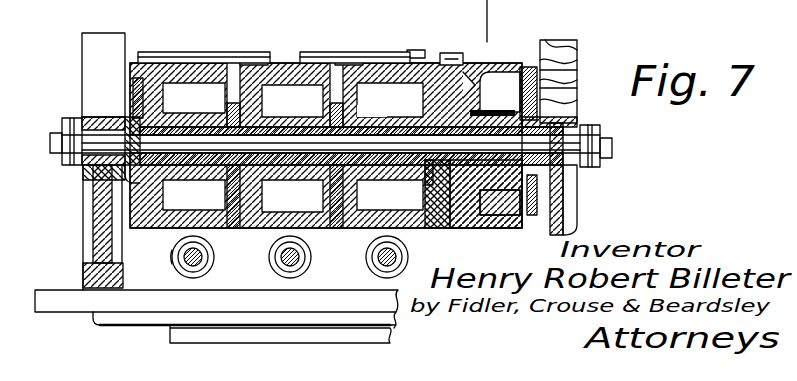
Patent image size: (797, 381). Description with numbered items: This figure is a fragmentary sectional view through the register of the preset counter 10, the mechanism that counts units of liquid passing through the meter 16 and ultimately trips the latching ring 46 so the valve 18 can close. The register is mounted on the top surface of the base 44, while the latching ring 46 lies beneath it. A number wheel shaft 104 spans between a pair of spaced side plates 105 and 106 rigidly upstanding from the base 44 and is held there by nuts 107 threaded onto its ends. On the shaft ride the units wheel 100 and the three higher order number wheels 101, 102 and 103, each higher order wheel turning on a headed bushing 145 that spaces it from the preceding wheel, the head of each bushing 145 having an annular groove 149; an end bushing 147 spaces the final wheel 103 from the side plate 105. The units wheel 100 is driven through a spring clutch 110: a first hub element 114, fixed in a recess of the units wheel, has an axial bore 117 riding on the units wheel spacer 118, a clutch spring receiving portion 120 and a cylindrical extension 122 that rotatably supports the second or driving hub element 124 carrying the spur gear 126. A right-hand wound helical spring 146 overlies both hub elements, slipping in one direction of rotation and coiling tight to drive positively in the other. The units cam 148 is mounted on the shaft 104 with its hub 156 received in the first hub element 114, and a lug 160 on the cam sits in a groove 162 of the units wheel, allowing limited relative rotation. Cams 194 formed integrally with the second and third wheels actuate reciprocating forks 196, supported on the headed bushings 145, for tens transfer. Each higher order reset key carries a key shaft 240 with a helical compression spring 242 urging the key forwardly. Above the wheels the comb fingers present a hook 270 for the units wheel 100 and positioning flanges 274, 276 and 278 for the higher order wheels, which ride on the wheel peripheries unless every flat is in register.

The counter 10 is at (476, 3).
The meter 16 is at (507, 5).
The valve 18 is at (445, 25).
The base 44 is at (55, 296).
The latching ring 46 is at (112, 336).
The units wheel 100 is at (540, 60).
The higher order number wheel 101 is at (385, 63).
The higher order number wheel 102 is at (292, 63).
The final number wheel 103 is at (150, 60).
The number wheel shaft 104 is at (112, 167).
The side plate 105 is at (98, 203).
The side plate 106 is at (570, 215).
The nut 107 is at (68, 128).
The spring clutch 110 is at (578, 55).
The first hub element 114 is at (500, 228).
The axial bore 117 is at (500, 75).
The units wheel spacer 118 is at (437, 226).
The clutch spring receiving portion 120 is at (578, 45).
The cylindrical extension 122 is at (580, 117).
The second or driving hub element 124 is at (578, 88).
The spur gear 126 is at (577, 195).
The headed bushing 145 is at (194, 98).
The helical spring 146 is at (578, 70).
The end bushing 147 is at (118, 110).
The units cam 148 is at (390, 100).
The annular groove 149 is at (292, 101).
The hub 156 is at (475, 70).
The lug 160 is at (440, 68).
The groove 162 is at (385, 111).
The cam 194 is at (242, 228).
The reciprocating fork 196 is at (232, 52).
The key shaft 240 is at (175, 252).
The helical compression spring 242 is at (174, 263).
The hook 270 is at (430, 55).
The positioning flange 274 is at (355, 52).
The positioning flange 276 is at (258, 55).
The positioning flange 278 is at (175, 52).